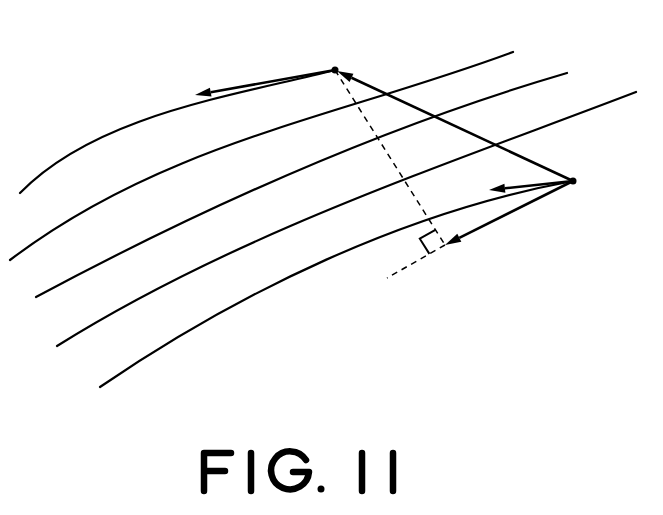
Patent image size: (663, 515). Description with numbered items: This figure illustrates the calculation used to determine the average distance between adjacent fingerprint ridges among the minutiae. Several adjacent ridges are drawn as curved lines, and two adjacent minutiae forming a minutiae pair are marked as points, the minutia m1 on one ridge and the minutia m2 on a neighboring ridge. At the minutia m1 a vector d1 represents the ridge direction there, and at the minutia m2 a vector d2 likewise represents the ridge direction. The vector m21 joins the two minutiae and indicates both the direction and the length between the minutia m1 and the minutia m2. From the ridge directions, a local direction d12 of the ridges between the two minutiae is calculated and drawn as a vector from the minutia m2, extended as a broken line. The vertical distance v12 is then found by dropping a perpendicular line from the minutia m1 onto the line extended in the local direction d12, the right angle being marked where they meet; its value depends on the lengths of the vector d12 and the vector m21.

The minutia m1 is at (336, 68).
The minutia m2 is at (577, 183).
The vector m21 is at (474, 131).
The vector d1 is at (262, 82).
The vector d2 is at (524, 182).
The local direction d12 is at (527, 205).
The vertical distance v12 is at (390, 162).